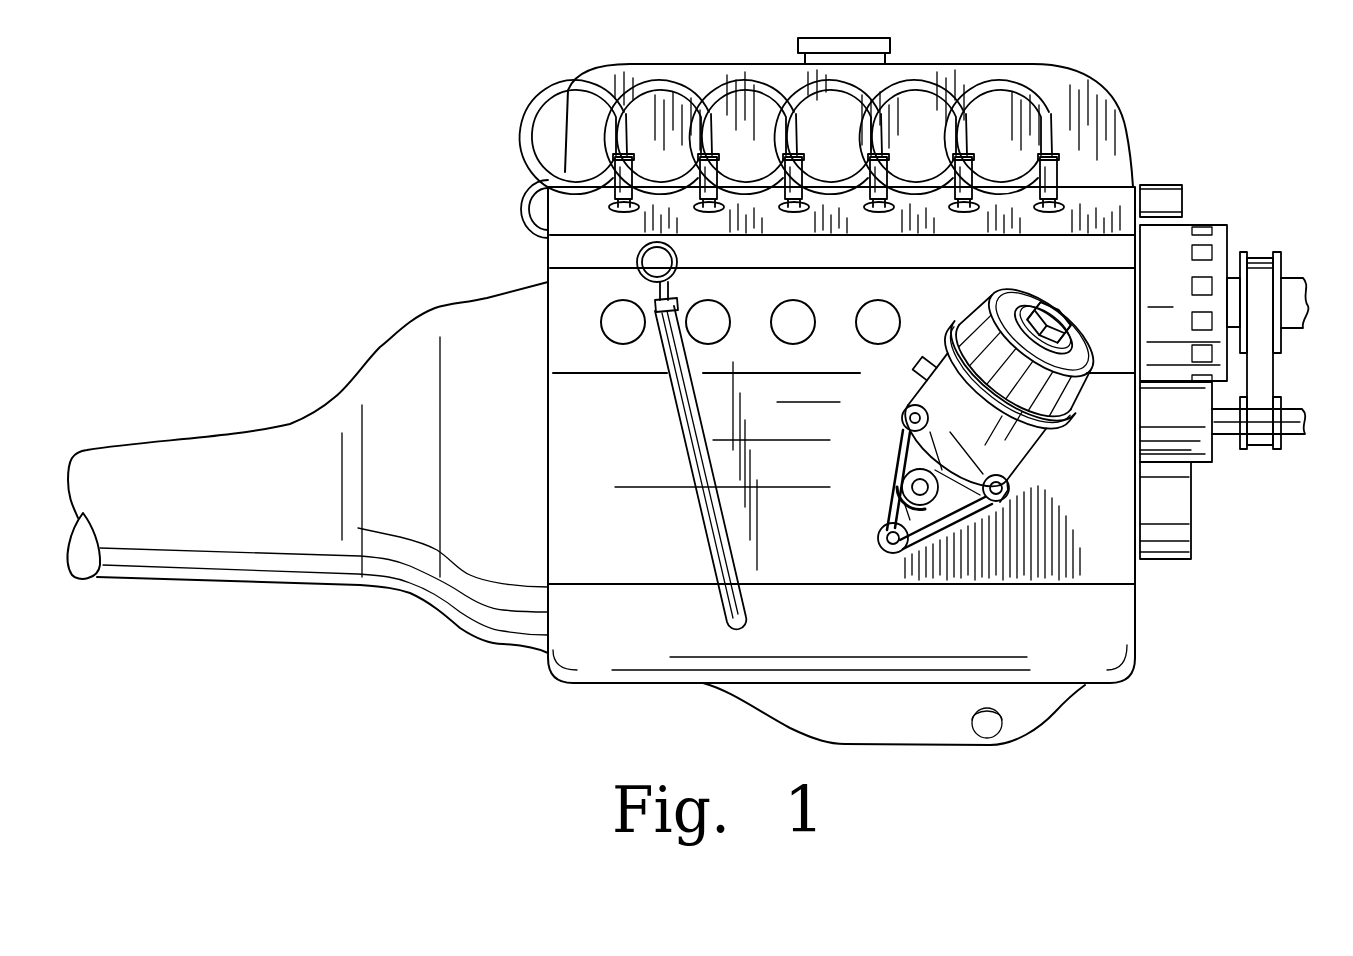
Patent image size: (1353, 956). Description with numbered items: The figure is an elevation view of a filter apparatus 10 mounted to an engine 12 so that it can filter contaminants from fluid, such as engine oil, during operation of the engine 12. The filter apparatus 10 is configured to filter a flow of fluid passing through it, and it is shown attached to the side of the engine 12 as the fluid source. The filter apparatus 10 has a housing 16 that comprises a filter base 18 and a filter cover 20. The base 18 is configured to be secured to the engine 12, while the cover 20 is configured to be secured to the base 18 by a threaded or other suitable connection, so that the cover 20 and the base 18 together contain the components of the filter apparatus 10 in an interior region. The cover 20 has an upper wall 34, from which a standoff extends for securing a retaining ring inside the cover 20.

The filter apparatus 10 is at (1058, 447).
The engine 12 is at (1120, 173).
The housing 16 is at (990, 395).
The filter base 18 is at (950, 404).
The filter cover 20 is at (1032, 297).
The upper wall 34 is at (1087, 344).